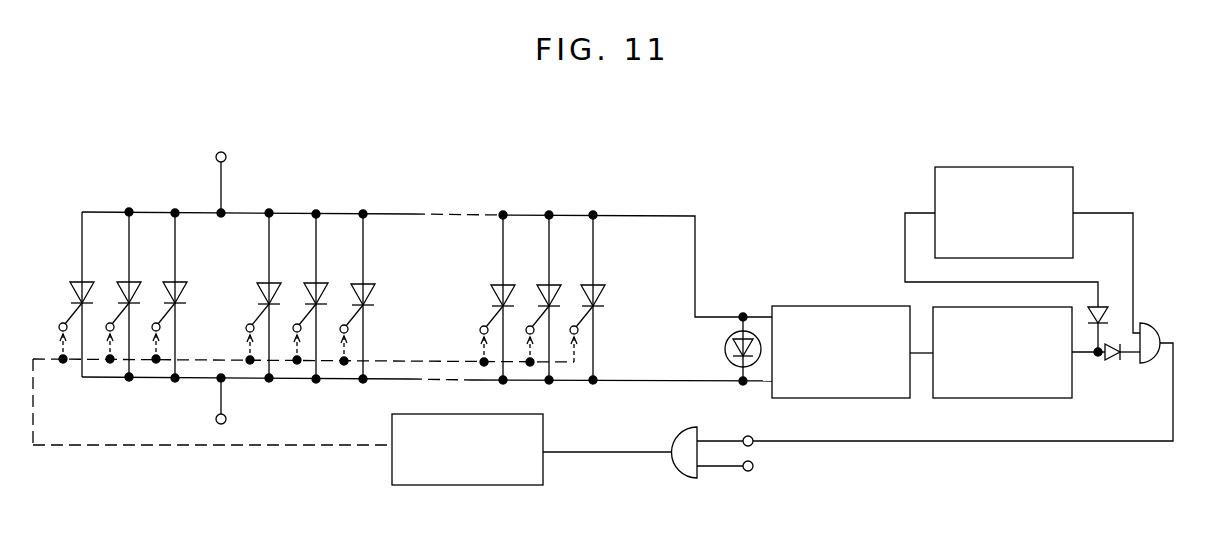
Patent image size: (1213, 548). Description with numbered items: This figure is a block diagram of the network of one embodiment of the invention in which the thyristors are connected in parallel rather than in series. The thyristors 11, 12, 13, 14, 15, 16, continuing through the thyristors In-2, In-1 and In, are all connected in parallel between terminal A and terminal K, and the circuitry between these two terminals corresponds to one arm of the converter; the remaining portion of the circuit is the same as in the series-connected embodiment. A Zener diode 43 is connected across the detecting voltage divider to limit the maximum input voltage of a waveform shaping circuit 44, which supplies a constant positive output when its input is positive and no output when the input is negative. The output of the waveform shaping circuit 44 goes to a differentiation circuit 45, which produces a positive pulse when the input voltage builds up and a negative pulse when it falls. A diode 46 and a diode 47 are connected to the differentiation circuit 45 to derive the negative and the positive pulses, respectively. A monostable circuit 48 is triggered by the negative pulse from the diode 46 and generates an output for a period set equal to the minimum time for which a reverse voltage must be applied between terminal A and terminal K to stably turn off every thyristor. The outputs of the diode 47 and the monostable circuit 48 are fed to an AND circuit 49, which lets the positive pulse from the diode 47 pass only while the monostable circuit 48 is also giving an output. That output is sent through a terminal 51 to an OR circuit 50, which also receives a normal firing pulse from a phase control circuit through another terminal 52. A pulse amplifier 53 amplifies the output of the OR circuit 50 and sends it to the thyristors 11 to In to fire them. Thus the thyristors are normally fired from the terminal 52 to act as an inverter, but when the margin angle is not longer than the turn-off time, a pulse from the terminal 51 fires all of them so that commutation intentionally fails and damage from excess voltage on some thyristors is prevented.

The thyristor 11 is at (75, 282).
The thyristor 12 is at (122, 282).
The thyristor 13 is at (168, 282).
The thyristor 14 is at (263, 283).
The thyristor 15 is at (310, 283).
The thyristor 16 is at (357, 283).
The thyristor In-2 is at (492, 290).
The thyristor In-1 is at (538, 290).
The thyristor In is at (584, 290).
The Zener diode 43 is at (722, 349).
The waveform shaping circuit 44 is at (852, 306).
The differentiation circuit 45 is at (1017, 398).
The diode 46 is at (1108, 315).
The diode 47 is at (1113, 362).
The monostable circuit 48 is at (1073, 233).
The AND circuit 49 is at (1159, 334).
The OR circuit 50 is at (680, 460).
The terminal 51 is at (756, 423).
The terminal 52 is at (753, 470).
The pulse amplifier 53 is at (460, 485).
The terminal A is at (220, 171).
The terminal K is at (220, 411).